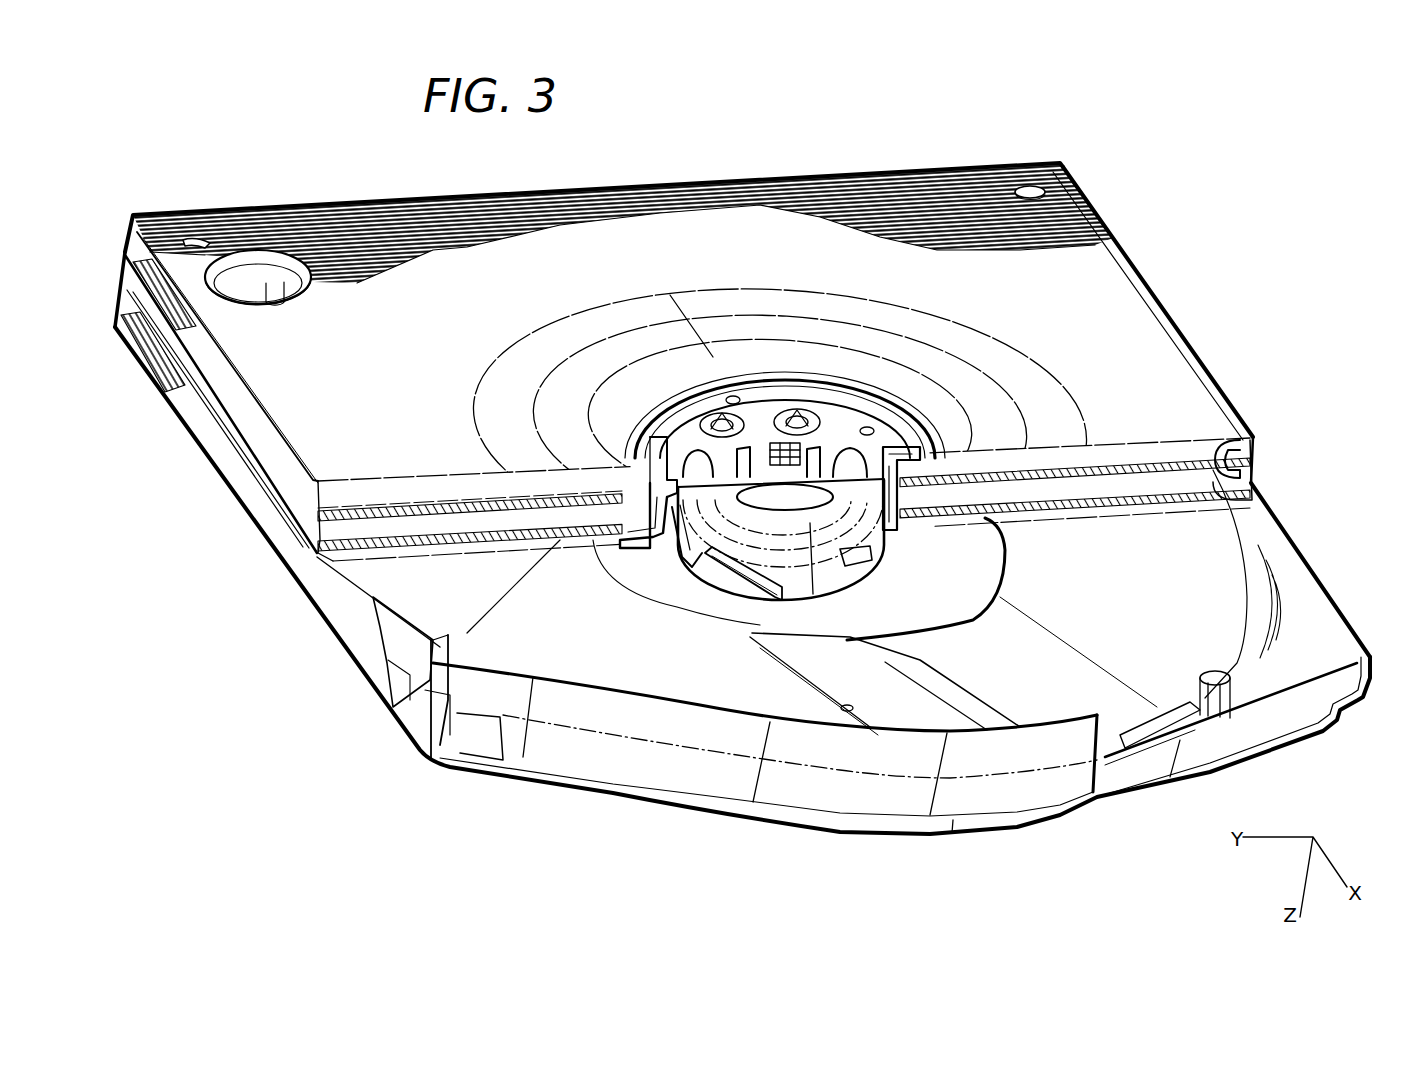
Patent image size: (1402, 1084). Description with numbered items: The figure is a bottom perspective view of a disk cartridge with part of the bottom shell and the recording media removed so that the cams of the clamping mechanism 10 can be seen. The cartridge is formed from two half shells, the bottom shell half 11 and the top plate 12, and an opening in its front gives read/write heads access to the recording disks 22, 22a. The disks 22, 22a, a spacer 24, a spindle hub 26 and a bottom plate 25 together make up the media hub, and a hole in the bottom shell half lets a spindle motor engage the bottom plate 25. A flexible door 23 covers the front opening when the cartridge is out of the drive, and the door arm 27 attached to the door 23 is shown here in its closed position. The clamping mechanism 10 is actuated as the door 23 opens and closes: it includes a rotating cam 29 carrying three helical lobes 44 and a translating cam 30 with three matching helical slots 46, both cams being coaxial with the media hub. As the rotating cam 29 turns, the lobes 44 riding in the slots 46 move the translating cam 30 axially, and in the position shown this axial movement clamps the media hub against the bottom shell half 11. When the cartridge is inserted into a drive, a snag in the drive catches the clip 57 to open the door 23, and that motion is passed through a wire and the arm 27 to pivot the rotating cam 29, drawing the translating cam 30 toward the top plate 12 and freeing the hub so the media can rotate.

The clamping mechanism 10 is at (848, 598).
The bottom shell half 11 is at (273, 447).
The top plate 12 is at (1270, 722).
The recording disk 22 is at (1255, 445).
The recording disk 22a is at (1247, 482).
The flexible door 23 is at (1002, 783).
The spacer 24 is at (920, 490).
The bottom plate 25 is at (912, 456).
The spindle hub 26 is at (895, 537).
The door arm 27 is at (857, 682).
The rotating cam 29 is at (701, 572).
The translating cam 30 is at (703, 527).
The helical lobe 44 is at (714, 598).
The helical slot 46 is at (668, 530).
The clip 57 is at (450, 683).